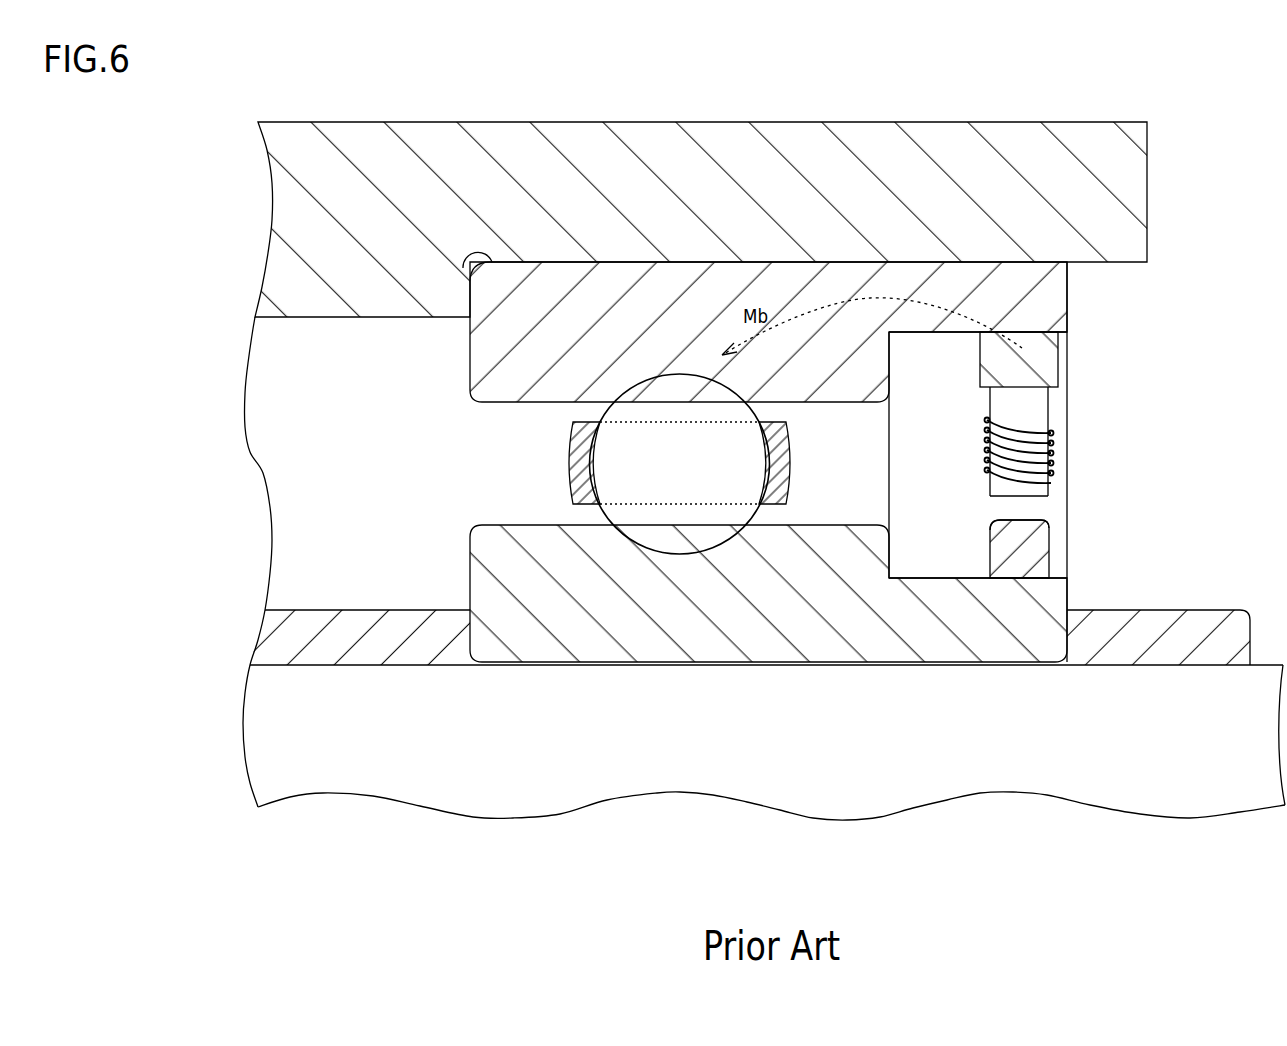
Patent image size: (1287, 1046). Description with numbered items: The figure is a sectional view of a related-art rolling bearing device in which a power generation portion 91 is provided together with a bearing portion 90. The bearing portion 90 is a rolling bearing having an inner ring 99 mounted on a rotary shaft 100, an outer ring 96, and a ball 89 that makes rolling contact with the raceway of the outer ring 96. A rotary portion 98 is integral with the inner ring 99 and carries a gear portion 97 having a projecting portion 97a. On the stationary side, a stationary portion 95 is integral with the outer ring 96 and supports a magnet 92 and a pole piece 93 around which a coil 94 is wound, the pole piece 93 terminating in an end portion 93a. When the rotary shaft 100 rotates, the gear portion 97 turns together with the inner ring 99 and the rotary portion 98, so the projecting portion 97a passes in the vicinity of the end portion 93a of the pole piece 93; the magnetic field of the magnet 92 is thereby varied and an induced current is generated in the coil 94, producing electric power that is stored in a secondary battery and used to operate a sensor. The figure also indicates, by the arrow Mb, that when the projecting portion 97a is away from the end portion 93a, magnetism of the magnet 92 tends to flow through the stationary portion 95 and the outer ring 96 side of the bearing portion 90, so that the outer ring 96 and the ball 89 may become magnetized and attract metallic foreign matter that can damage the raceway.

The ball 89 is at (605, 410).
The bearing portion 90 is at (789, 261).
The power generation portion 91 is at (1084, 408).
The magnet 92 is at (1035, 363).
The pole piece 93 is at (1031, 483).
The end portion 93a is at (1012, 499).
The coil 94 is at (1052, 452).
The stationary portion 95 is at (1048, 305).
The outer ring 96 is at (698, 305).
The gear portion 97 is at (1050, 557).
The projecting portion 97a is at (1027, 528).
The rotary portion 98 is at (1010, 645).
The inner ring 99 is at (658, 645).
The rotary shaft 100 is at (343, 775).